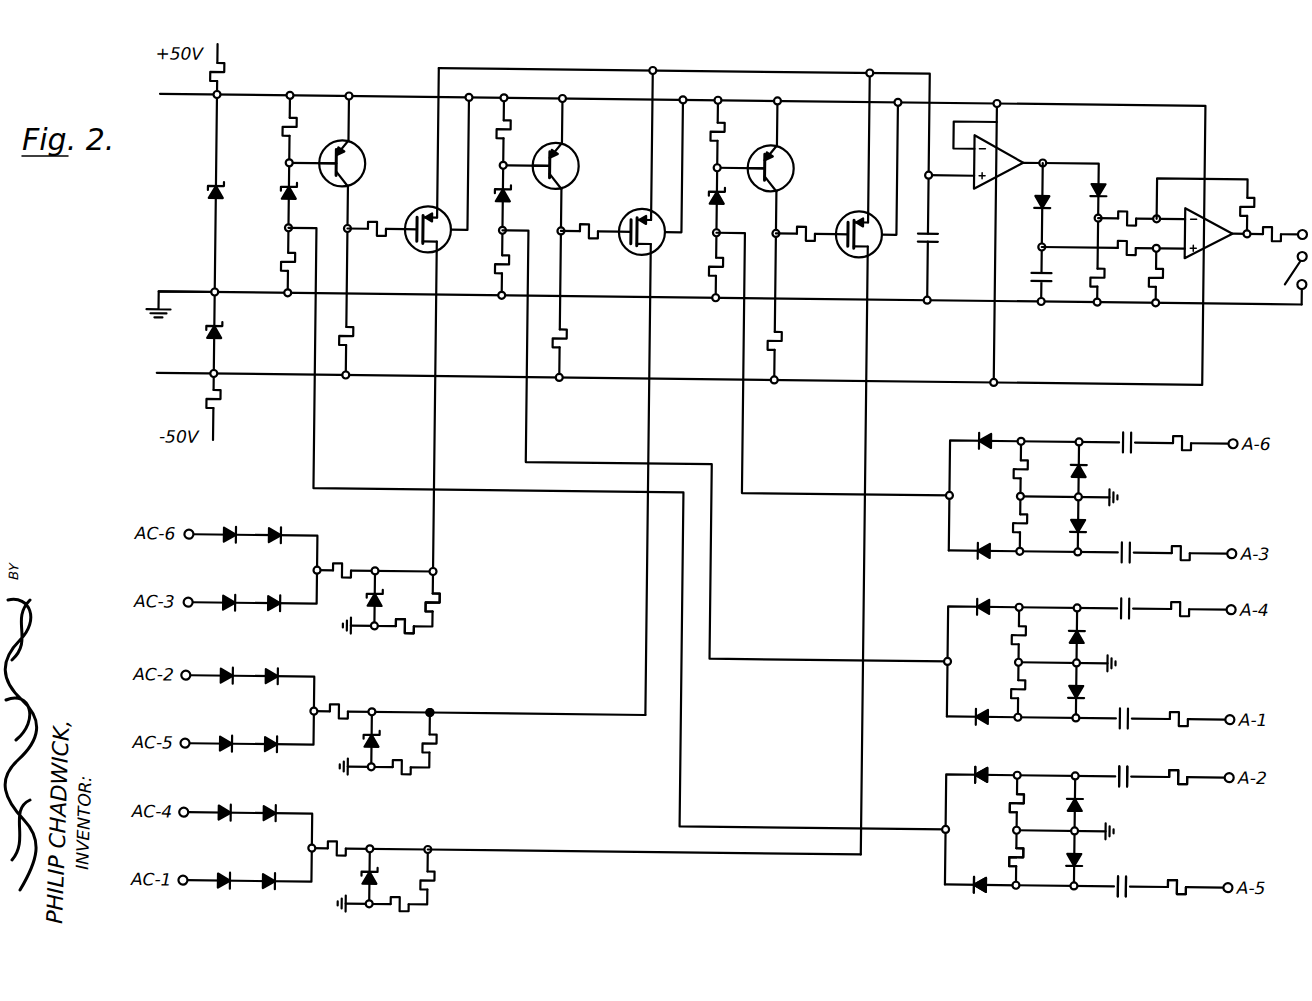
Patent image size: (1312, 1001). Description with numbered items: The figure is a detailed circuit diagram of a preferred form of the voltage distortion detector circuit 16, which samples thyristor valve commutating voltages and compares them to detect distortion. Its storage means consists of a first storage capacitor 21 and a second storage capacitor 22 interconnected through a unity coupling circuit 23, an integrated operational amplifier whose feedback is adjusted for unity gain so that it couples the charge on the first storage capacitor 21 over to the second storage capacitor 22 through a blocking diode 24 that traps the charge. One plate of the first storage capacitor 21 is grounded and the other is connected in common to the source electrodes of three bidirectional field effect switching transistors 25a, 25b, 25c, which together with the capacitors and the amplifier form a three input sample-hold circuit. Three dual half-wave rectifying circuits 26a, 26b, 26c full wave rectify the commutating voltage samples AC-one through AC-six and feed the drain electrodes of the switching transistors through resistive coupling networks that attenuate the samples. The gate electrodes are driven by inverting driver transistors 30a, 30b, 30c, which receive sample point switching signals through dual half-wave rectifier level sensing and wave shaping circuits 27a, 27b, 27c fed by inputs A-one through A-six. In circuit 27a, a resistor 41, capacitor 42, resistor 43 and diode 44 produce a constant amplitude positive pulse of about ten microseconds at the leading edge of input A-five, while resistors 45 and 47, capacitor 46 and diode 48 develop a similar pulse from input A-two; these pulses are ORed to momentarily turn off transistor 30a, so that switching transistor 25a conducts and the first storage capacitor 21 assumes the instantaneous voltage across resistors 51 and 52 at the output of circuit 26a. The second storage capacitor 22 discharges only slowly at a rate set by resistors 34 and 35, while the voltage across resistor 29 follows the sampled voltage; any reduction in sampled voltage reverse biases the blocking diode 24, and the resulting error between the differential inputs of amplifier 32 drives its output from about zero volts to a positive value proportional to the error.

The voltage distortion detector circuit 16 is at (707, 341).
The first storage capacitor 21 is at (942, 232).
The second storage capacitor 22 is at (1034, 267).
The unity coupling circuit 23 is at (1009, 146).
The blocking diode 24 is at (1035, 193).
The bidirectional field effect switching transistor 25a is at (414, 208).
The bidirectional field effect switching transistor 25b is at (628, 208).
The bidirectional field effect switching transistor 25c is at (844, 209).
The dual half-wave rectifying circuit 26a is at (278, 581).
The dual half-wave rectifying circuit 26b is at (277, 722).
The dual half-wave rectifying circuit 26c is at (276, 860).
The level sensing and wave shaping circuit 27a is at (1187, 832).
The level sensing and wave shaping circuit 27b is at (1186, 656).
The level sensing and wave shaping circuit 27c is at (1189, 492).
The resistor 29 is at (1094, 265).
The inverting driver transistor 30a is at (356, 147).
The inverting driver transistor 30b is at (571, 147).
The inverting driver transistor 30c is at (786, 147).
The amplifier 32 is at (1216, 232).
The resistor 34 is at (1165, 262).
The resistor 35 is at (1125, 245).
The resistor 41 is at (1188, 888).
The capacitor 42 is at (1130, 888).
The resistor 43 is at (1017, 852).
The diode 44 is at (984, 882).
The resistor 45 is at (1186, 760).
The capacitor 46 is at (1131, 760).
The resistor 47 is at (1017, 800).
The diode 48 is at (985, 763).
The resistor 51 is at (442, 592).
The resistor 52 is at (403, 638).